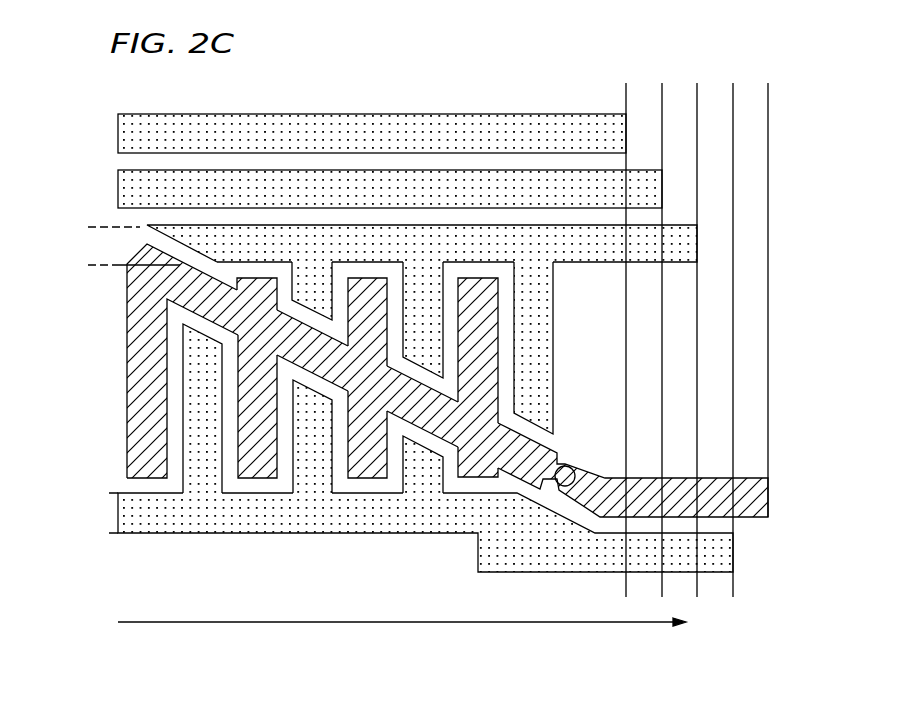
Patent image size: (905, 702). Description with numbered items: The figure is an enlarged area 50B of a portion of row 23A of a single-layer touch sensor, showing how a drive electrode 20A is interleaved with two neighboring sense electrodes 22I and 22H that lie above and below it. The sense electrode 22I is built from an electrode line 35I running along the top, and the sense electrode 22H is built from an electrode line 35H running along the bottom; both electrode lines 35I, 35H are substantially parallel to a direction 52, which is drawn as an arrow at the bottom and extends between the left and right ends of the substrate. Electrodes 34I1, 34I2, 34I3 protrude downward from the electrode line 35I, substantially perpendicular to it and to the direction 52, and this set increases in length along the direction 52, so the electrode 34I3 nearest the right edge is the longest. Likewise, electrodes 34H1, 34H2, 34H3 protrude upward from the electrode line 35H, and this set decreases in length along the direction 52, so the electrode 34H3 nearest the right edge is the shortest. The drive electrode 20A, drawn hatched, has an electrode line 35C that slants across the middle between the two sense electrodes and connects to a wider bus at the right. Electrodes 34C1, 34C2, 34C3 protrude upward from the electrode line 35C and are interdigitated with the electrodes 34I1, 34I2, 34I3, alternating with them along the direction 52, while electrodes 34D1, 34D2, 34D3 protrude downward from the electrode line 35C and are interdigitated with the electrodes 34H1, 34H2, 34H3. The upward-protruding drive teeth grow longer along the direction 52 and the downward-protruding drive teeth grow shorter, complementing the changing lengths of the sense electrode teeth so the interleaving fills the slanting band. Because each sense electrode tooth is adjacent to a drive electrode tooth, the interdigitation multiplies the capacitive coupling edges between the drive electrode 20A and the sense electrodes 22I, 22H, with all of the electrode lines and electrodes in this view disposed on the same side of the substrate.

The enlarged area 50B is at (443, 321).
The drive electrode 20A is at (412, 323).
The sense electrode 22I is at (422, 253).
The sense electrode 22H is at (425, 468).
The row 23A is at (796, 139).
The electrode 34C1 is at (257, 288).
The electrode 34C2 is at (368, 280).
The electrode 34C3 is at (470, 277).
The electrode 34I1 is at (312, 270).
The electrode 34I2 is at (427, 277).
The electrode 34I3 is at (537, 287).
The electrode 34D1 is at (258, 468).
The electrode 34D2 is at (368, 468).
The electrode 34D3 is at (493, 452).
The electrode 34H1 is at (200, 488).
The electrode 34H2 is at (317, 477).
The electrode 34H3 is at (423, 483).
The electrode line 35I is at (83, 227).
The electrode line 35H is at (107, 493).
The electrode line 35C is at (585, 478).
The direction 52 is at (140, 622).